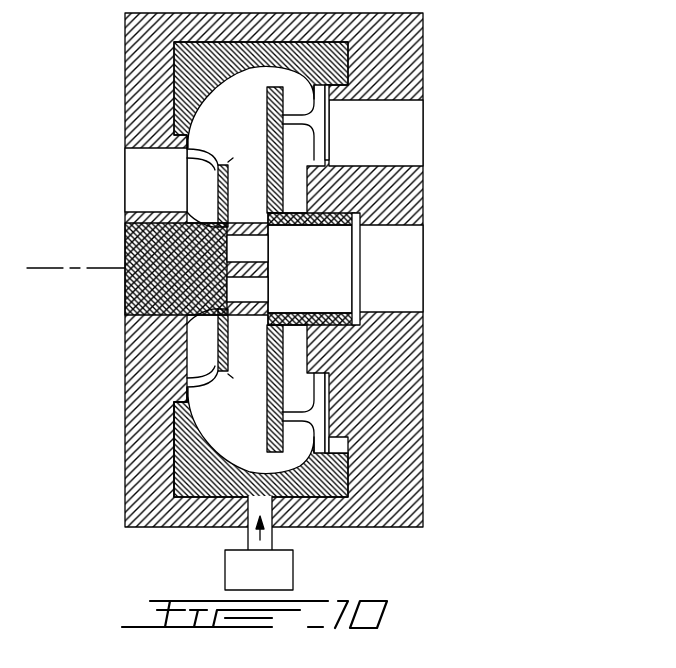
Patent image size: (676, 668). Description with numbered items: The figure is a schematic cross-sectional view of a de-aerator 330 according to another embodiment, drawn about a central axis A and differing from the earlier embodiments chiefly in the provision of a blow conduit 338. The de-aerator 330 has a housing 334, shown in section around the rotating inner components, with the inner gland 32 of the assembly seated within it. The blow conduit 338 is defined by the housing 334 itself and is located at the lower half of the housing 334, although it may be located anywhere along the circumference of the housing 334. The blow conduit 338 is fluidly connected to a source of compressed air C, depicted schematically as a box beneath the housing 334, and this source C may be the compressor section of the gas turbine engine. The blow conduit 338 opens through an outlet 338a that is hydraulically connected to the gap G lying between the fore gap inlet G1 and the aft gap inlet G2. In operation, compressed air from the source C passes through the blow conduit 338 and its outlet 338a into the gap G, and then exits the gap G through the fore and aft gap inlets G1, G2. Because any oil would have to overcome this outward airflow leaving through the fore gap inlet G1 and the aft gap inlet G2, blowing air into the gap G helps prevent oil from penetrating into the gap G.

The de-aerator 330 is at (480, 144).
The housing 334 is at (423, 371).
The seal gland 32 is at (185, 502).
The blow conduit 338 is at (272, 513).
The outlet 338a is at (286, 485).
The fore gap inlet G1 is at (159, 401).
The aft gap inlet G2 is at (345, 420).
The gap G is at (173, 442).
The axis A is at (42, 266).
The source of compressed air C is at (258, 583).